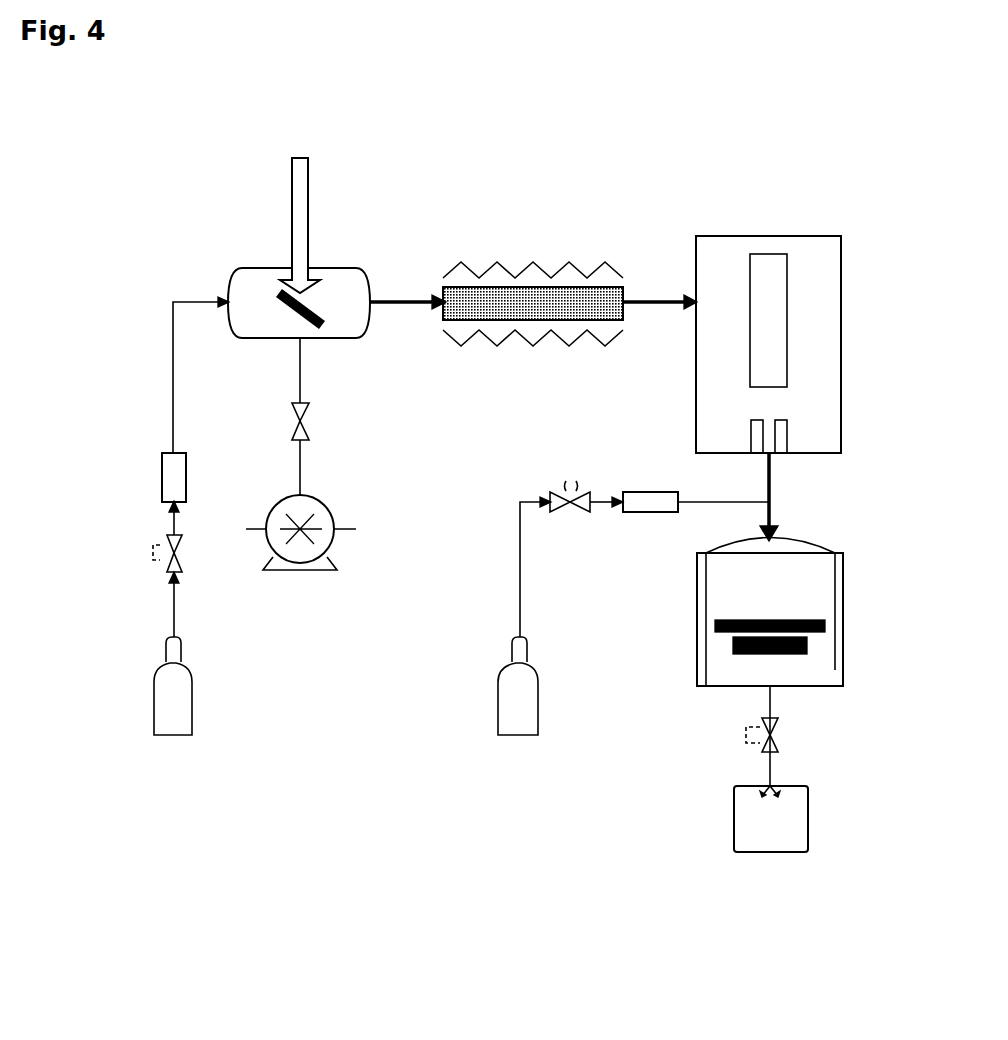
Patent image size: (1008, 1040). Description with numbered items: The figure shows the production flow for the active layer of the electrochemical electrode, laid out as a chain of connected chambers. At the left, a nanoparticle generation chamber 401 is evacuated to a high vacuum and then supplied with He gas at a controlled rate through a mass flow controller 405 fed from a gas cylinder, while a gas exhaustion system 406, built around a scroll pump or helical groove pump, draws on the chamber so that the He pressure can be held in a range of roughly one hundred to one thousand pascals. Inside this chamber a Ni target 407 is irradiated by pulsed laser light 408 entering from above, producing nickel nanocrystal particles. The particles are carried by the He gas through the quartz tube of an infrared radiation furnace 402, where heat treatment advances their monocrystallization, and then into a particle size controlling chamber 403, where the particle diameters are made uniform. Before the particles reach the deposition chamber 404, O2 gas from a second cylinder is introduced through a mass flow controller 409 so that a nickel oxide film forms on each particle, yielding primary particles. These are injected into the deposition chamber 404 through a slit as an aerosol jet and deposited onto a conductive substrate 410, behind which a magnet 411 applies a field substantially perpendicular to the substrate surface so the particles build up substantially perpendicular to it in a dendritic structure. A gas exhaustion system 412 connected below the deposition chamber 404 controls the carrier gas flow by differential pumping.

The nanoparticle generation chamber 401 is at (296, 321).
The infrared radiation furnace 402 is at (533, 324).
The particle size controlling chamber 403 is at (802, 344).
The deposition chamber 404 is at (782, 603).
The mass flow controller 405 is at (144, 494).
The gas exhaustion system 406 is at (301, 556).
The Ni target 407 is at (316, 320).
The pulsed laser light 408 is at (324, 225).
The mass flow controller 409 is at (650, 487).
The conductive substrate 410 is at (725, 620).
The magnet 411 is at (740, 650).
The gas exhaustion system 412 is at (771, 838).